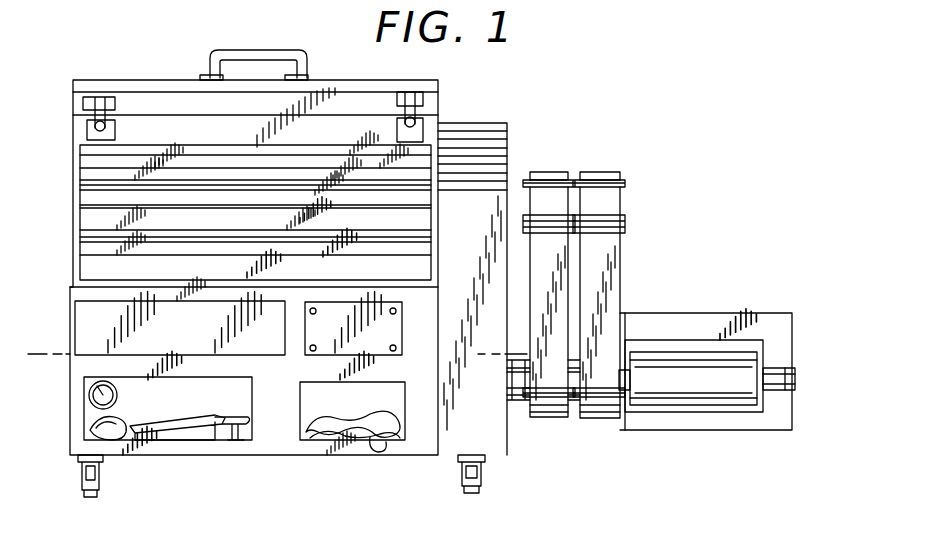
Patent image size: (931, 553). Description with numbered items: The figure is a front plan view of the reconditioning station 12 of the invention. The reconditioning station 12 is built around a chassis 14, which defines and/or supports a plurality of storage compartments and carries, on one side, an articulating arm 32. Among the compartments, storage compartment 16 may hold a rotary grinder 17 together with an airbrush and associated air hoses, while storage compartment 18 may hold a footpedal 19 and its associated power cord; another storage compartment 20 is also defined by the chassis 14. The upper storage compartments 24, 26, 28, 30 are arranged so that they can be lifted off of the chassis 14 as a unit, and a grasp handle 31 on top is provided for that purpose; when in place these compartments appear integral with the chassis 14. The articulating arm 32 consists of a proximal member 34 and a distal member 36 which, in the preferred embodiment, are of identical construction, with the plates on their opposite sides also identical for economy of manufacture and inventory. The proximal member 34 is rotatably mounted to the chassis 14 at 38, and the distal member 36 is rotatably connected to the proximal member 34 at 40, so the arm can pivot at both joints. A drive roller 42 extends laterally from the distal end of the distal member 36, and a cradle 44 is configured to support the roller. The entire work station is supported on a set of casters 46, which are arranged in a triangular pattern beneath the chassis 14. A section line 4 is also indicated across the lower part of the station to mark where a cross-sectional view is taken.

The section line 4- 4 is at (38, 352).
The reconditioning station 12 is at (566, 94).
The chassis 14 is at (496, 448).
The storage compartment 16 is at (194, 392).
The rotary grinder 17 is at (167, 441).
The storage compartment 18 is at (326, 399).
The footpedal 19 is at (325, 441).
The storage compartment 20 is at (476, 122).
The storage compartment 24 is at (73, 96).
The storage compartment 26 is at (79, 155).
The storage compartment 28 is at (79, 205).
The storage compartment 30 is at (79, 248).
The grasp handle 31 is at (285, 50).
The articulating arm 32 is at (638, 254).
The proximal member 34 is at (551, 420).
The distal member 36 is at (601, 420).
The rotatable mounting 38 is at (518, 401).
The rotatable connection 40 is at (575, 175).
The drive roller 42 is at (714, 396).
The cradle 44 is at (771, 313).
The casters 46 is at (92, 498).